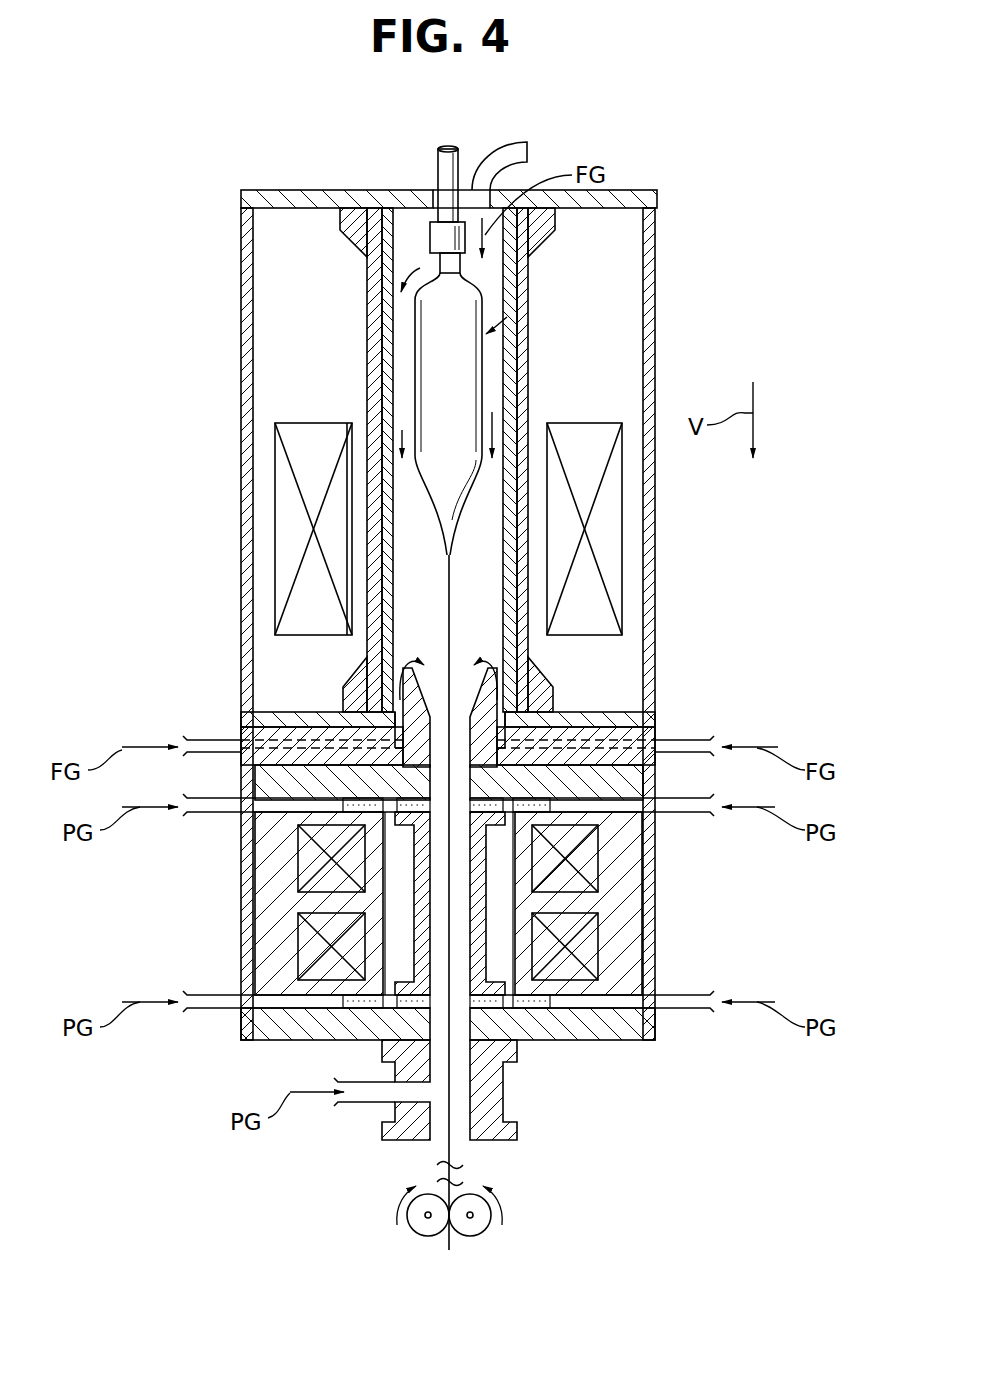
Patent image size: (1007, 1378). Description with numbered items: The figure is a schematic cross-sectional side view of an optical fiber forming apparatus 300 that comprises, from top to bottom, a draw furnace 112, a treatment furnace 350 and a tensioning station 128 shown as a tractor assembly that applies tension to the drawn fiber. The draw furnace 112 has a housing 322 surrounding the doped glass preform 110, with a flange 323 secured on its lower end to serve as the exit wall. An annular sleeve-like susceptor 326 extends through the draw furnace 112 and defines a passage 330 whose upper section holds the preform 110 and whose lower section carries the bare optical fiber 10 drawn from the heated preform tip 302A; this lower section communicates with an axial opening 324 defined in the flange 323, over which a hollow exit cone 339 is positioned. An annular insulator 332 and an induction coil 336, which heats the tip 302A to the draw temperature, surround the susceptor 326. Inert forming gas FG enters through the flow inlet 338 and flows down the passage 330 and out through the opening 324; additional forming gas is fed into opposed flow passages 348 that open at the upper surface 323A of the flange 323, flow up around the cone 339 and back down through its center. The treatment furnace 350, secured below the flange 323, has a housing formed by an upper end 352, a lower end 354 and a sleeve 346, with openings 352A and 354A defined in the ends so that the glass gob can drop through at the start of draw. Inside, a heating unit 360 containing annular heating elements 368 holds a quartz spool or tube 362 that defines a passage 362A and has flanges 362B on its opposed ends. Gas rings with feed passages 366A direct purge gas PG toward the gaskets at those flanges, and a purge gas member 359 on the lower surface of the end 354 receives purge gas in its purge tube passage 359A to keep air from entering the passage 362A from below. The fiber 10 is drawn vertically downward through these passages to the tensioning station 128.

The optical fiber forming apparatus 300 is at (740, 197).
The flow inlet 338 is at (531, 150).
The passage 330 is at (527, 277).
The optical fiber preform 110 is at (430, 330).
The susceptor 326 is at (510, 343).
The annular insulator 332 is at (520, 395).
The induction coil 336 is at (280, 455).
The draw furnace 112 is at (655, 397).
The preform tip 302A is at (447, 557).
The optical fiber 10 is at (447, 610).
The exit cone 339 is at (460, 664).
The housing 322 is at (655, 535).
The upper surface of flange 323A is at (335, 708).
The flow passages 348 is at (275, 722).
The axial opening 324 is at (500, 728).
The flange 323 is at (657, 735).
The upper end of treatment furnace 352 is at (262, 777).
The upper opening 352A is at (438, 795).
The flanges of spool 362B is at (383, 813).
The sleeve 346 is at (255, 858).
The annular heating elements 368 is at (583, 855).
The treatment furnace 350 is at (712, 900).
The spool or tube 362 is at (415, 900).
The passage 362A is at (442, 940).
The heating unit 360 is at (624, 912).
The feed passages 366A is at (211, 1006).
The lower opening 354A is at (382, 1045).
The lower end of treatment furnace 354 is at (529, 1085).
The purge gas member 359 is at (478, 1113).
The purge tube passage 359A is at (517, 1120).
The tensioning station 128 is at (494, 1232).